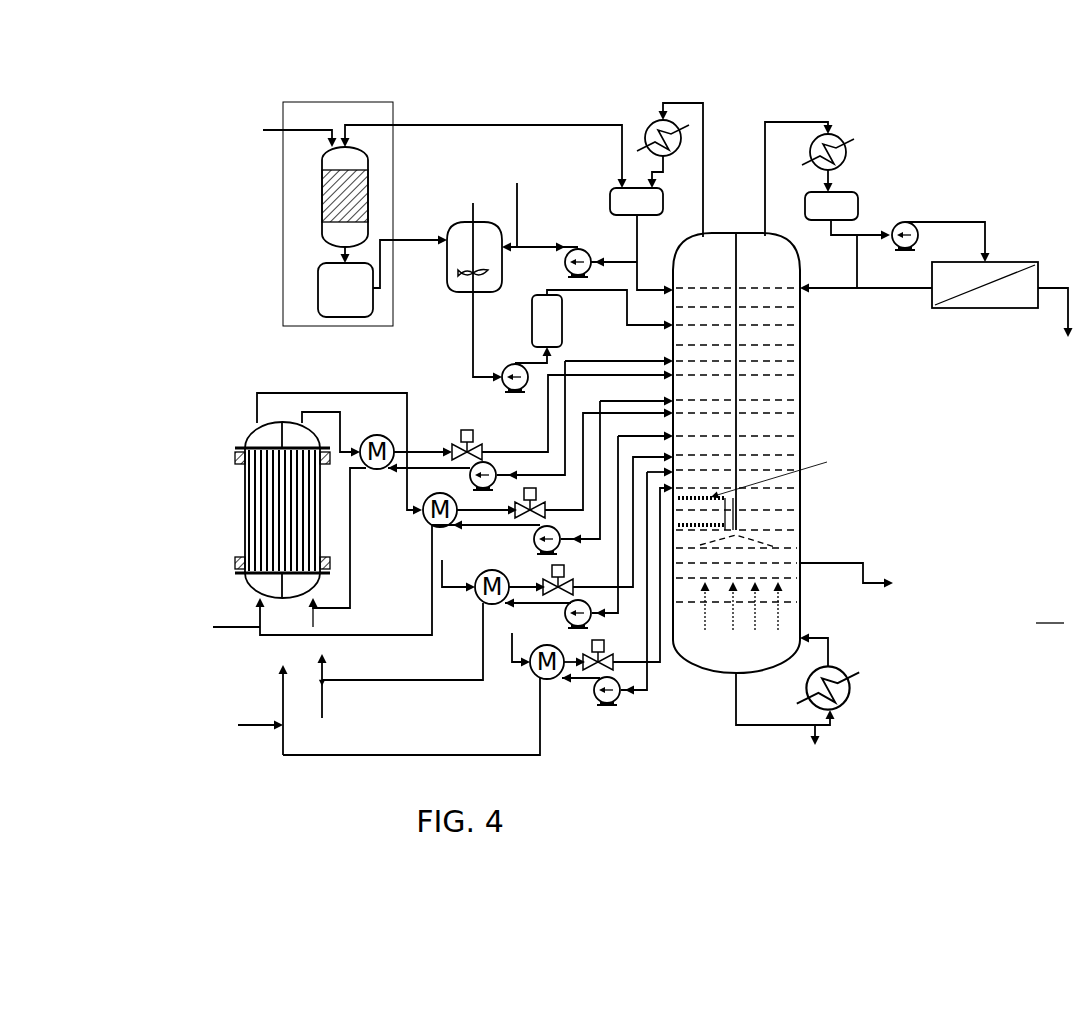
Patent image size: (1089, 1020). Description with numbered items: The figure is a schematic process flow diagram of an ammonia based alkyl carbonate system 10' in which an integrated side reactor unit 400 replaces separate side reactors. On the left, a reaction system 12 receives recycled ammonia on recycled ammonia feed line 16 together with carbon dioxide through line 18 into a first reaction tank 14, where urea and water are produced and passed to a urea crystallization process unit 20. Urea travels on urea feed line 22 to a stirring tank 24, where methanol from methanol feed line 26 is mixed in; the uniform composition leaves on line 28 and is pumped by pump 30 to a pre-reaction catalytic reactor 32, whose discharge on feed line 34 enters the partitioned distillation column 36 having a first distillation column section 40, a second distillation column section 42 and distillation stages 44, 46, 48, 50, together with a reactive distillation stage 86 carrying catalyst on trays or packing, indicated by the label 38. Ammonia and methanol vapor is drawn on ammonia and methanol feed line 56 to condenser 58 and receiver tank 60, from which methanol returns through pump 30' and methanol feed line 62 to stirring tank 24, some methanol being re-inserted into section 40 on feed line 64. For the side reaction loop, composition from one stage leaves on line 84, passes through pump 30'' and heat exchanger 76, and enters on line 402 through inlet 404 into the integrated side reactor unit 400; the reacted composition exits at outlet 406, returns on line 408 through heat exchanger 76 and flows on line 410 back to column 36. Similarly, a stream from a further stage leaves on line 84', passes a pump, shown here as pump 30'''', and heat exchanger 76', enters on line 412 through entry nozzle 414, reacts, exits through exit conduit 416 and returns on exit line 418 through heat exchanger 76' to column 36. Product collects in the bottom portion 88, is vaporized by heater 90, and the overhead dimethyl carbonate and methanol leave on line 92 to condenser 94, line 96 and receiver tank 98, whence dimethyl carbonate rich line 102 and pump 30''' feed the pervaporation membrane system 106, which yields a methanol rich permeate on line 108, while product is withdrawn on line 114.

The system 10' is at (1050, 612).
The reaction system 12 is at (283, 220).
The first reaction tank 14 is at (368, 160).
The recycled ammonia feed line 16 is at (465, 125).
The carbon dioxide feed line 18 is at (263, 130).
The urea crystallization process unit 20 is at (318, 298).
The urea feed line 22 is at (430, 242).
The stirring tank 24 is at (472, 322).
The methanol feed line 26 is at (510, 222).
The urea and methanol composition line 28 is at (472, 362).
The pump 30 is at (492, 383).
The pump 30' is at (598, 226).
The pump 30'' is at (476, 425).
The pump 30''' is at (910, 228).
The pump 30'''' is at (428, 518).
The pre-reaction catalytic reactor 32 is at (532, 312).
The feed line 34 is at (565, 290).
The partitioned distillation column 36 is at (802, 380).
The catalytic tray or packed column section 38 is at (740, 425).
The first distillation column section 40 is at (713, 381).
The second distillation column section 42 is at (759, 275).
The distillation stage 44 is at (702, 335).
The distillation stage 46 is at (702, 385).
The distillation stage 48 is at (702, 422).
The distillation stage 50 is at (702, 462).
The ammonia and methanol feed line 56 is at (705, 140).
The condenser 58 is at (652, 120).
The receiver tank 60 is at (613, 186).
The methanol feed line 62 is at (545, 246).
The feed line 64 is at (637, 266).
The heat exchanger 76 is at (517, 468).
The heat exchanger 76' is at (496, 575).
The line 84 is at (619, 349).
The line 84' is at (625, 393).
The reactive distillation stage 86 is at (740, 497).
The bottom portion 88 is at (742, 617).
The heater 90 is at (842, 657).
The dimethyl carbonate and methanol line 92 is at (770, 205).
The condenser 94 is at (845, 145).
The line 96 is at (838, 176).
The receiver tank 98 is at (858, 205).
The dimethyl carbonate rich line 102 is at (858, 268).
The pervaporation membrane system 106 is at (985, 308).
The line 108 is at (1065, 318).
The DMC product line 114 is at (865, 568).
The integrated side reactor unit 400 is at (215, 532).
The line 402 is at (350, 555).
The inlet 404 is at (280, 600).
The outlet 406 is at (312, 410).
The line 408 is at (370, 437).
The line 410 is at (548, 395).
The line 412 is at (432, 602).
The entry nozzle 414 is at (250, 590).
The exit conduit 416 is at (257, 426).
The exit line 418 is at (272, 393).